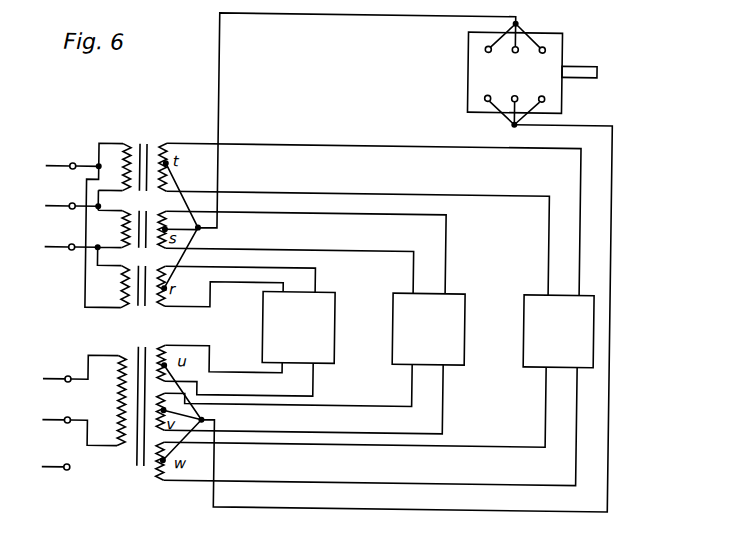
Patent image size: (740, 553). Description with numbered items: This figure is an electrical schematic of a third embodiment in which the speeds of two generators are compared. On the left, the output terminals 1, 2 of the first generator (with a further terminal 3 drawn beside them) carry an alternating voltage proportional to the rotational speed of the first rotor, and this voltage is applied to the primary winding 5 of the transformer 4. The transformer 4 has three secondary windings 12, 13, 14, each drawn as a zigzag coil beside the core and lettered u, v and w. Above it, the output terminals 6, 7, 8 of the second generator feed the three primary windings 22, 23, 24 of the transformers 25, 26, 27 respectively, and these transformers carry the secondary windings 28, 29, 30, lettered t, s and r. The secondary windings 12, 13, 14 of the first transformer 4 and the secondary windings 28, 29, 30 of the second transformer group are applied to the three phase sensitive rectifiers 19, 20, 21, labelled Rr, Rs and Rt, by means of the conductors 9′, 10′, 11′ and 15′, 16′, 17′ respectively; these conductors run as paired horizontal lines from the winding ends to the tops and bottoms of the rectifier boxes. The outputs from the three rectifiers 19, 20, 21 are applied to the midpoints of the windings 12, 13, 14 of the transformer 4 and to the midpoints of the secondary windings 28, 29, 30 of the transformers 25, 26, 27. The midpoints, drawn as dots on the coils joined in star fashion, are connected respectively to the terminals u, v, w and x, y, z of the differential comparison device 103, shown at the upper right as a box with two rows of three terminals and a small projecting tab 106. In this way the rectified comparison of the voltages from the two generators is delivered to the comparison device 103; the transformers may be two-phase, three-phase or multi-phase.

The output terminal 1 is at (80, 366).
The output terminal 2 is at (80, 418).
The primary terminal 3 is at (56, 453).
The transformer 4 is at (143, 465).
The primary winding 5 is at (119, 402).
The output terminal 6 is at (83, 222).
The output terminal 7 is at (83, 194).
The output terminal 8 is at (83, 243).
The conductor 9′ is at (300, 145).
The conductor 10′ is at (308, 212).
The conductor 11′ is at (315, 289).
The secondary winding 12 is at (168, 346).
The secondary winding 13 is at (169, 401).
The secondary winding 14 is at (163, 475).
The conductor 15′ is at (258, 372).
The conductor 16′ is at (256, 404).
The conductor 17′ is at (252, 443).
The phase sensitive rectifier 19 is at (336, 308).
The phase sensitive rectifier 20 is at (465, 290).
The phase sensitive rectifier 21 is at (589, 292).
The primary winding 22 is at (118, 154).
The primary winding 23 is at (112, 228).
The primary winding 24 is at (121, 290).
The transformer 25 is at (144, 143).
The transformer 26 is at (139, 244).
The transformer 27 is at (139, 304).
The secondary winding 28 is at (163, 149).
The secondary winding 29 is at (166, 223).
The secondary winding 30 is at (158, 304).
The differential comparison device 103 is at (559, 33).
The terminal tab 106 is at (595, 73).